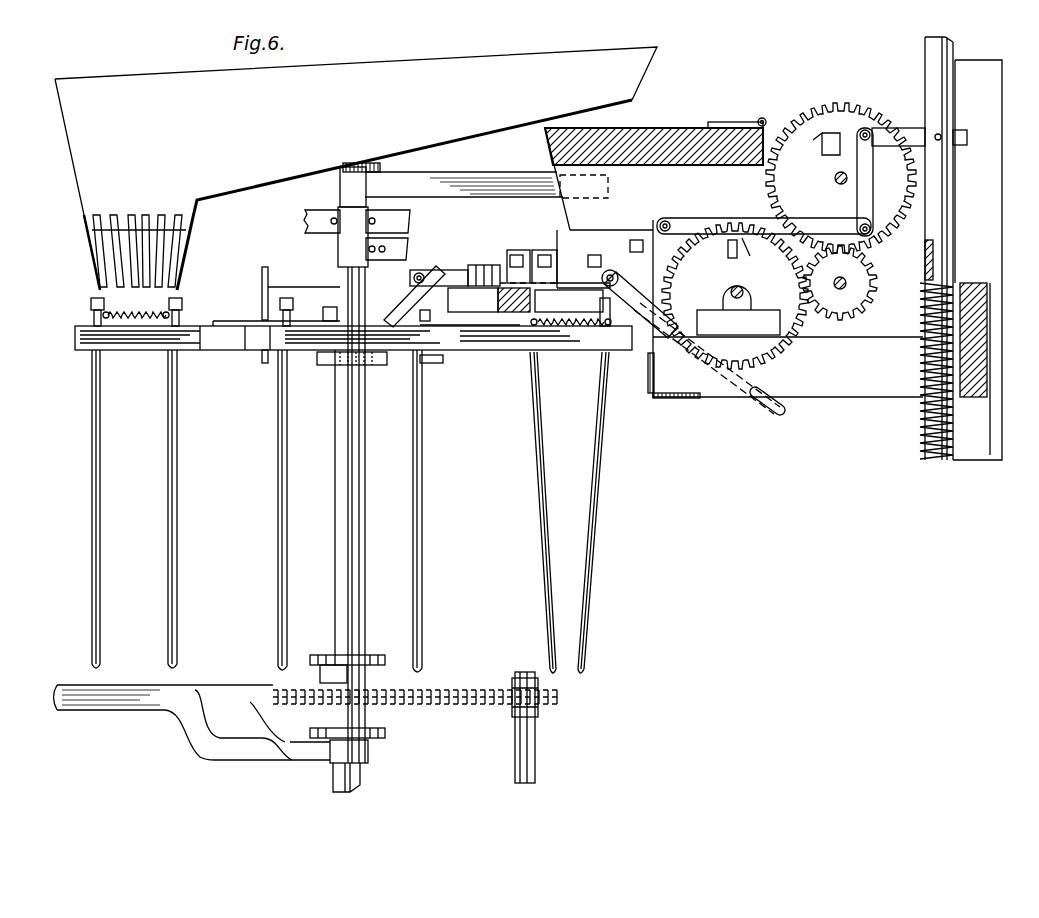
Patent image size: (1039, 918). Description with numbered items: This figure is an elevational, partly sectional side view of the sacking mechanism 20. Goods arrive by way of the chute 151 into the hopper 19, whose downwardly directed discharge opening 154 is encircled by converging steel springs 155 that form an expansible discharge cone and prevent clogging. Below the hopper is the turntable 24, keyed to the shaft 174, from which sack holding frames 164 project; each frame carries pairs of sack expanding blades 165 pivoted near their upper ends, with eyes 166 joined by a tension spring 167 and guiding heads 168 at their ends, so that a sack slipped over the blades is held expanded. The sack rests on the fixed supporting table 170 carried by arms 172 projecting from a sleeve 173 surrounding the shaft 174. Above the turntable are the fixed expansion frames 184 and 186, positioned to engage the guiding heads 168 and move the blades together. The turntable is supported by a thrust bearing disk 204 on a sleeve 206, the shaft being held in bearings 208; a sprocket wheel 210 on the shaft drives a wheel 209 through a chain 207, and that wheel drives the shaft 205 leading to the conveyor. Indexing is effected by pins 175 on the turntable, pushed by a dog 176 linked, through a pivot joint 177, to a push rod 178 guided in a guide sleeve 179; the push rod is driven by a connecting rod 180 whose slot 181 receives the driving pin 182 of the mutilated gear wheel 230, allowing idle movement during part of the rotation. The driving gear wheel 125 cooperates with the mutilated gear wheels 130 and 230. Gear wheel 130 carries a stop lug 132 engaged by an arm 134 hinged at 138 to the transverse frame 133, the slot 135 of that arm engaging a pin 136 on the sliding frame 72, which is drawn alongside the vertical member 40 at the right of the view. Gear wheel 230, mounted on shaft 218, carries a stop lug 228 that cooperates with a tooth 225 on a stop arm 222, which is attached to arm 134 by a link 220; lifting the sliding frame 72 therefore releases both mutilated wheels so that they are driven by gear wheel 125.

The hopper 19 is at (88, 170).
The sacking mechanism 20 is at (51, 278).
The turntable 24 is at (245, 360).
The vertical rod 40 is at (925, 252).
The sliding frame 72 is at (977, 260).
The gear wheel 125 is at (870, 282).
The mutilated gear wheel 130 is at (856, 120).
The stop lug 132 is at (815, 152).
The transverse frame 133 is at (655, 128).
The arm 134 is at (890, 128).
The slot 135 is at (940, 120).
The pin 136 is at (968, 135).
The hinge 138 is at (750, 122).
The chute 151 is at (508, 70).
The discharge opening 154 is at (190, 238).
The steel springs 155 is at (97, 258).
The sack holding frame 164 is at (75, 333).
The sack expanding blades 165 is at (100, 508).
The eyes 166 is at (110, 312).
The tension spring 167 is at (146, 320).
The guiding heads 168 is at (90, 304).
The supporting table 170 is at (130, 712).
The arms 172 is at (222, 760).
The sleeve 173 is at (368, 748).
The shaft 174 is at (345, 278).
The pins 175 is at (383, 300).
The dog 176 is at (428, 283).
The pivot joint 177 is at (484, 264).
The push rod 178 is at (566, 275).
The guide sleeve 179 is at (530, 262).
The connecting rod 180 is at (655, 335).
The slot 181 is at (775, 414).
The driving pin 182 is at (720, 382).
The expansion frame 184 is at (426, 304).
The expansion frame 186 is at (282, 290).
The thrust bearing disk 204 is at (428, 363).
The shaft 205 is at (537, 750).
The sleeve 206 is at (365, 422).
The chain 207 is at (450, 690).
The bearings 208 is at (328, 658).
The wheel 209 is at (560, 699).
The sprocket wheel 210 is at (372, 660).
The shaft 218 is at (738, 310).
The link 220 is at (858, 196).
The stop arm 222 is at (692, 218).
The tooth 225 is at (752, 246).
The stop lug 228 is at (728, 250).
The mutilated gear wheel 230 is at (803, 322).